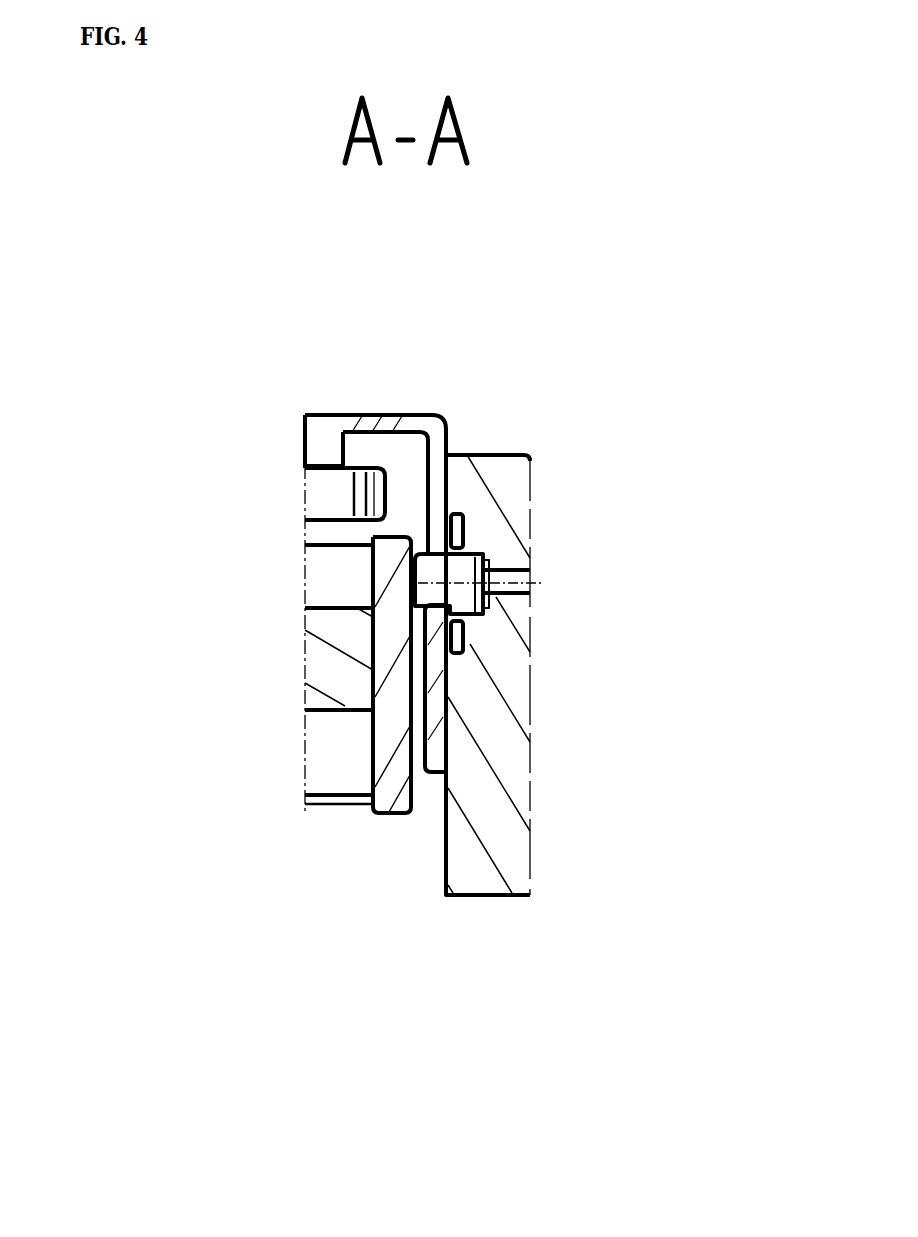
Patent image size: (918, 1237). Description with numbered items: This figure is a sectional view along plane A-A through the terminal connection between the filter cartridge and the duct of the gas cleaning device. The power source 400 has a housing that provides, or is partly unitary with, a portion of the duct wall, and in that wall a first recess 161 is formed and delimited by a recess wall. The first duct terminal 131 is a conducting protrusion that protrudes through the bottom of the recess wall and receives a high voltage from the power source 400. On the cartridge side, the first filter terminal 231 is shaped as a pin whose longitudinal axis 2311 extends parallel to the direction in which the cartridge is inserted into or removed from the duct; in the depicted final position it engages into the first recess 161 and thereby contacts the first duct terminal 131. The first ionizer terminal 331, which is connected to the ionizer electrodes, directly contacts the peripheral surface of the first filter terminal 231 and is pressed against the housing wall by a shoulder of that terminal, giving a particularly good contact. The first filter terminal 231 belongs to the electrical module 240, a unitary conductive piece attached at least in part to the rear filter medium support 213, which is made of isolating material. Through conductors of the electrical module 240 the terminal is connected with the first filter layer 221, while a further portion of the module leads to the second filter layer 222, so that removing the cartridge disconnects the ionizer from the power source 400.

The first ionizer terminal 331 is at (437, 477).
The power source 400 is at (507, 482).
The first filter terminal 231 is at (480, 547).
The first recess 161 is at (485, 557).
The first filter layer 221 is at (327, 577).
The first duct terminal 131 is at (543, 586).
The longitudinal axis 2311 is at (490, 610).
The second filter layer 222 is at (327, 762).
The electrical module 240 is at (420, 713).
The rear filter medium support 213 is at (393, 783).